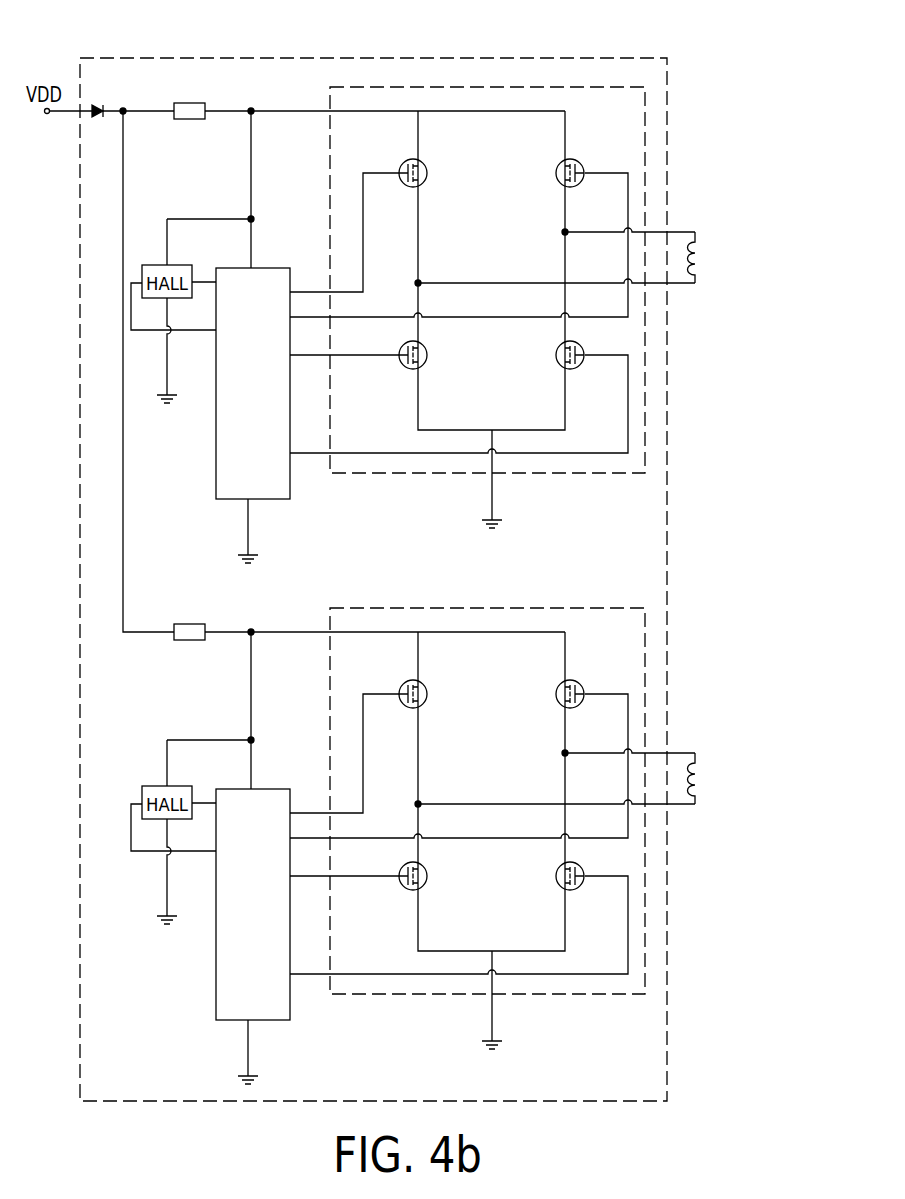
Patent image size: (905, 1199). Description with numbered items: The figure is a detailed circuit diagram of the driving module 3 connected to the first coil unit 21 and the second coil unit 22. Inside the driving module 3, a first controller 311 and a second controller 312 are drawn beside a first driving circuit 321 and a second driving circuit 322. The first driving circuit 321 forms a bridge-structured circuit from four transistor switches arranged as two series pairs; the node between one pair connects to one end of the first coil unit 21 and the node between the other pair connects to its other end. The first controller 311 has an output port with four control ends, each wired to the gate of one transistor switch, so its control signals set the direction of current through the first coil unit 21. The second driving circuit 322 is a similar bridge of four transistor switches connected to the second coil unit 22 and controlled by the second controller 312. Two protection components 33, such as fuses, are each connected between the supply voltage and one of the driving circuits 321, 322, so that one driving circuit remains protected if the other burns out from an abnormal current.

The driving module 3 is at (80, 171).
The protection component 33 is at (190, 103).
The first controller 311 is at (218, 472).
The second controller 312 is at (155, 936).
The first driving circuit 321 is at (645, 114).
The second driving circuit 322 is at (542, 828).
The first coil unit 21 is at (697, 245).
The second coil unit 22 is at (723, 774).